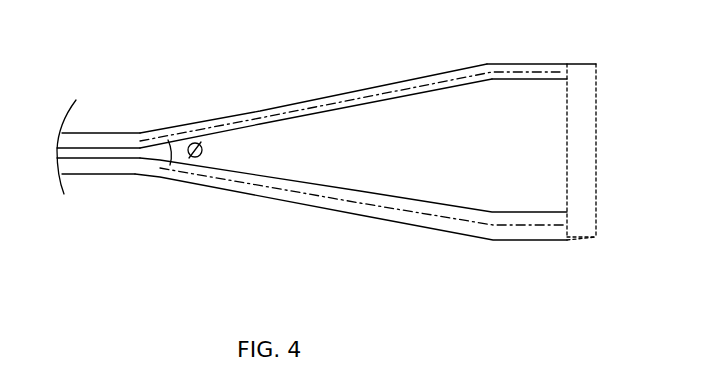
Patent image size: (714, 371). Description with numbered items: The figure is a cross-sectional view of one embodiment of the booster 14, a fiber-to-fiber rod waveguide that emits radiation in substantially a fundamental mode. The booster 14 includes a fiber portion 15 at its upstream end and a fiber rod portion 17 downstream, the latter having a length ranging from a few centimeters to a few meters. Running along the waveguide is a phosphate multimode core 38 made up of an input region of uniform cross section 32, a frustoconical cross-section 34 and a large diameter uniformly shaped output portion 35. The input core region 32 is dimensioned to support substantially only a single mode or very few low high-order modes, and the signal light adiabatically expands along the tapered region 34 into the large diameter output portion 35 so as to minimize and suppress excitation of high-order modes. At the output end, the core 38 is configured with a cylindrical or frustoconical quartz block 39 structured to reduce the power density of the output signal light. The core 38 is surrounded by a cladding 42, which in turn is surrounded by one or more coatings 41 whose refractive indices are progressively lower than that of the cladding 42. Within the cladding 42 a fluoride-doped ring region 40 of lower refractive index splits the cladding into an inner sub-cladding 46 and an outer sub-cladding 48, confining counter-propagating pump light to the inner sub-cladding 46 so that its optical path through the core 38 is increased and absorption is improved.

The booster 14 is at (318, 76).
The fiber portion 15 is at (105, 121).
The fiber rod portion 17 is at (522, 252).
The uniform cross section 32 is at (102, 150).
The frustoconical cross-section 34 is at (347, 122).
The large diameter uniformly shaped output portion 35 is at (477, 107).
The MM core 38 is at (468, 182).
The quartz block 39 is at (573, 112).
The ring region 40 is at (240, 180).
The coatings 41 is at (210, 117).
The cladding 42 is at (188, 183).
The inner sub-cladding 46 is at (263, 118).
The outer sub-cladding 48 is at (457, 67).